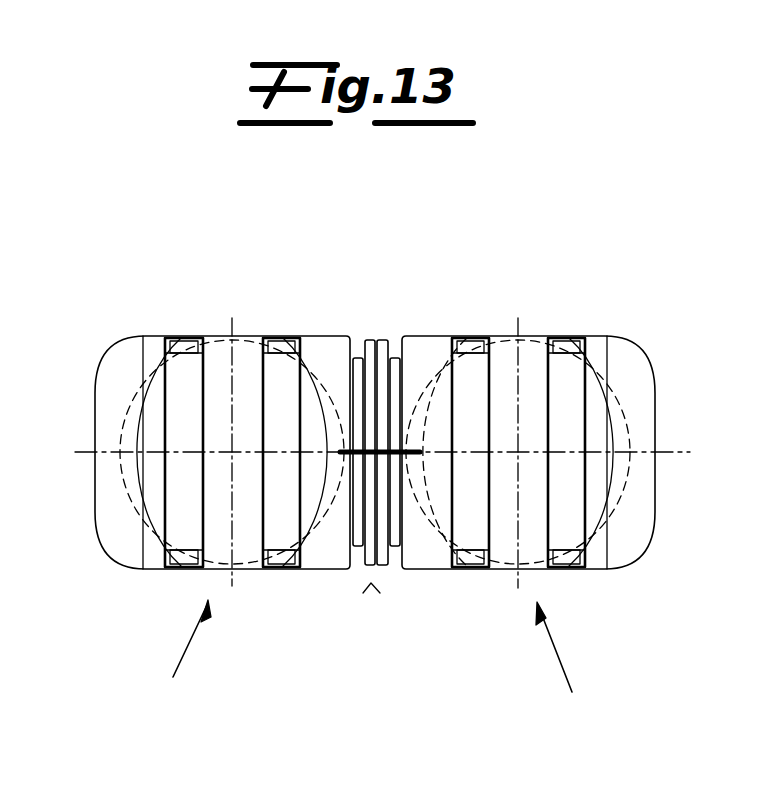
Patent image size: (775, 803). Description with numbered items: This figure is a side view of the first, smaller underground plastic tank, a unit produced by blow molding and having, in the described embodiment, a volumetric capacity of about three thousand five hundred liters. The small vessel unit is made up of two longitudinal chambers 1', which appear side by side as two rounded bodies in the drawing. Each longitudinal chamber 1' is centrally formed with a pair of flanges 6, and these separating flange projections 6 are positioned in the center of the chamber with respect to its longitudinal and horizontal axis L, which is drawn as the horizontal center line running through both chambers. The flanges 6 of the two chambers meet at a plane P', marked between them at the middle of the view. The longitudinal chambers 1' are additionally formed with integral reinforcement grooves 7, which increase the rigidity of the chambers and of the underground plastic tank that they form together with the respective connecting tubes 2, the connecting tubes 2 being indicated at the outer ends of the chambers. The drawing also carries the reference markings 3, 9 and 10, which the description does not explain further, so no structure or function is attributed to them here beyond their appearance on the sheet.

The longitudinal chamber 1' is at (375, 519).
The connecting tube 2 is at (125, 383).
The ball head 3 is at (132, 350).
The flange 6 is at (382, 340).
The reinforcement groove 7 is at (563, 520).
The direction of movement 9 is at (182, 665).
The direction of movement 10 is at (577, 666).
The plane P' is at (362, 584).
The longitudinal and horizontal axis L is at (686, 458).